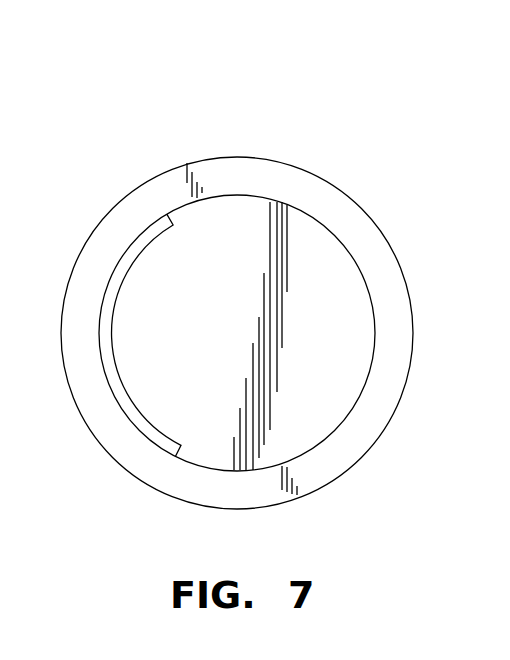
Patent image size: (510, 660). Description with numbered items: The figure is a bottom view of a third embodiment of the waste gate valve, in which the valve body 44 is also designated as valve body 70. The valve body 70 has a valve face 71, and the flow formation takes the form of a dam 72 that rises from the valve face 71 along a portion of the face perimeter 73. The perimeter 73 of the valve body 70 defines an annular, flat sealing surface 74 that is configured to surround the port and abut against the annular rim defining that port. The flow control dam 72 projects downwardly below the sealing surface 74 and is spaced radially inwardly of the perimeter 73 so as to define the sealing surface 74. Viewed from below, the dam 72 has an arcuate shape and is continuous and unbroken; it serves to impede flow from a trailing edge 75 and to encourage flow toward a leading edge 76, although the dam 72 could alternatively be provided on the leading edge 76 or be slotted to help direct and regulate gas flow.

The valve body 44 is at (135, 166).
The valve body 70 is at (260, 143).
The valve face 71 is at (293, 260).
The dam 72 is at (119, 408).
The face perimeter 73 is at (392, 252).
The sealing surface 74 is at (323, 465).
The trailing edge 75 is at (61, 357).
The leading edge 76 is at (367, 387).